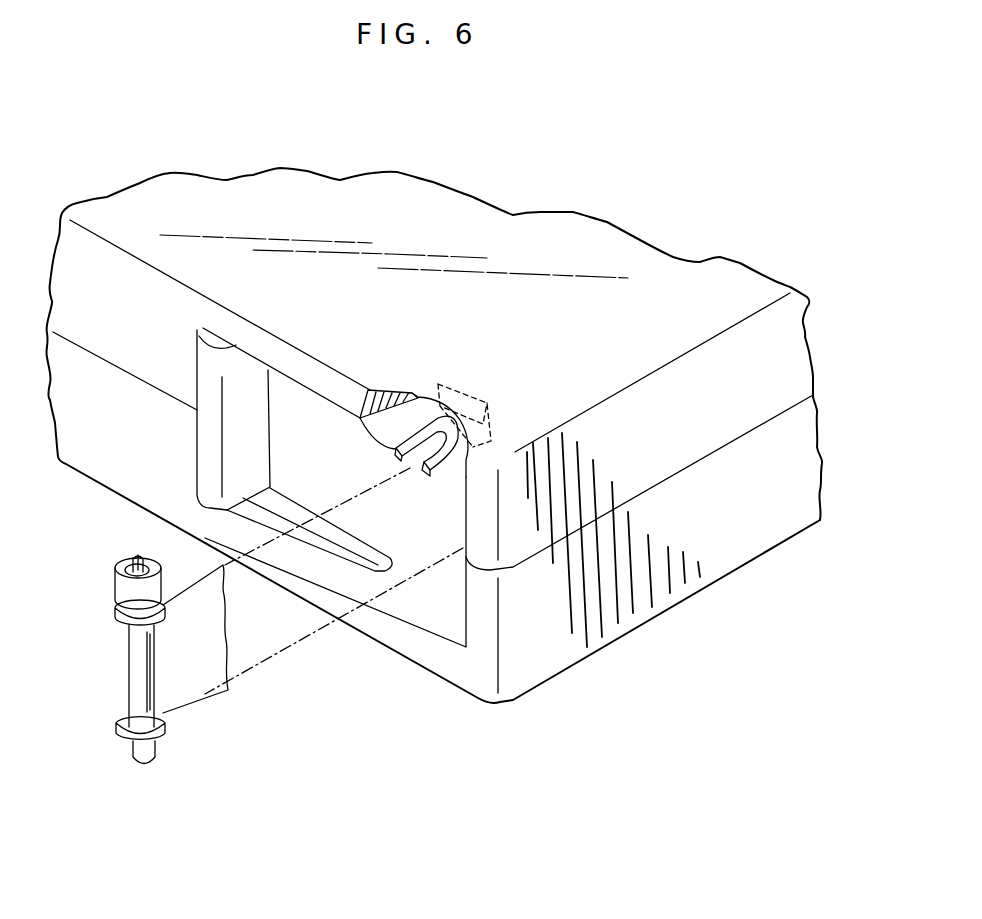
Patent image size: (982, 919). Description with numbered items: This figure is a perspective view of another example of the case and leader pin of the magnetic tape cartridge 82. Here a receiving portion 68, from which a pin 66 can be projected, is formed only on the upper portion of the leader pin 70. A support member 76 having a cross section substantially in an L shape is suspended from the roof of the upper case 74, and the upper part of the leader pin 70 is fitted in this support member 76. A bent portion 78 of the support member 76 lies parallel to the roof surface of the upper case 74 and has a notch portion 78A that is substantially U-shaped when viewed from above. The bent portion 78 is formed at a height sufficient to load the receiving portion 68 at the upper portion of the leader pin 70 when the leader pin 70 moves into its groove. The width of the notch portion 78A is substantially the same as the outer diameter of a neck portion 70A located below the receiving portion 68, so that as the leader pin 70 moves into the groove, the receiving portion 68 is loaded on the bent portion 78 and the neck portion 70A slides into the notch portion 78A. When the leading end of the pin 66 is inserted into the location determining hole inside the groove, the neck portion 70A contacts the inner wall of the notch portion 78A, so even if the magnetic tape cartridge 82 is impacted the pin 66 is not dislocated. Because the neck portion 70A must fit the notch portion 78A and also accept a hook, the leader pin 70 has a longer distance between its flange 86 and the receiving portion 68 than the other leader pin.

The magnetic tape cartridge 82 is at (648, 203).
The upper case 74 is at (797, 346).
The support member 76 is at (418, 424).
The bent portion 78 is at (393, 453).
The notch portion 78A is at (422, 460).
The pin 66 is at (136, 556).
The receiving portion 68 is at (118, 589).
The flange 86 is at (116, 610).
The neck portion 70A is at (128, 632).
The leader pin 70 is at (106, 638).